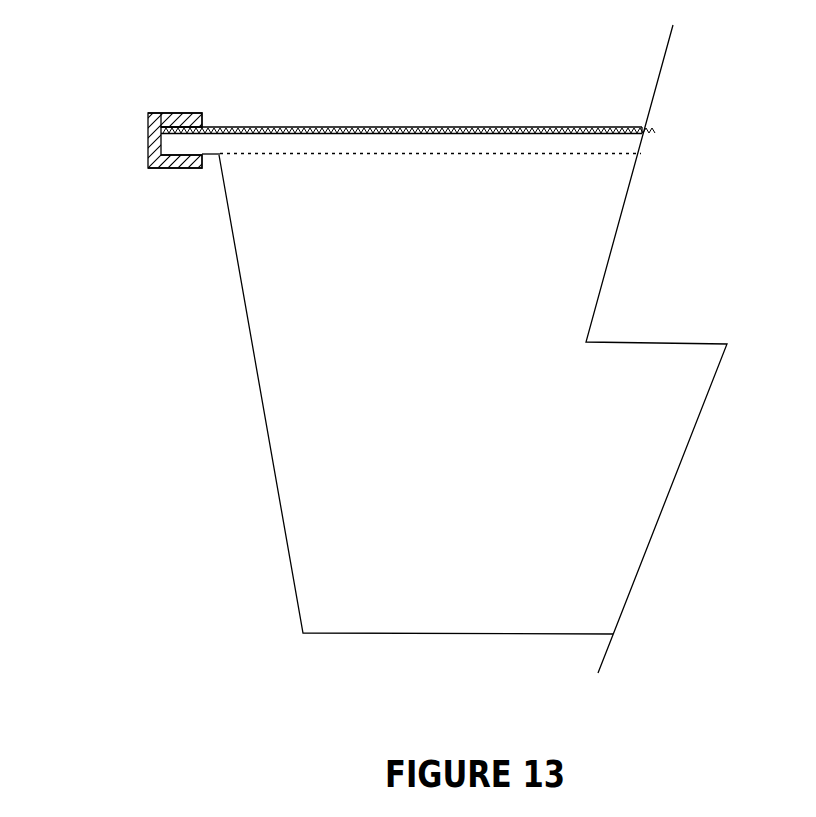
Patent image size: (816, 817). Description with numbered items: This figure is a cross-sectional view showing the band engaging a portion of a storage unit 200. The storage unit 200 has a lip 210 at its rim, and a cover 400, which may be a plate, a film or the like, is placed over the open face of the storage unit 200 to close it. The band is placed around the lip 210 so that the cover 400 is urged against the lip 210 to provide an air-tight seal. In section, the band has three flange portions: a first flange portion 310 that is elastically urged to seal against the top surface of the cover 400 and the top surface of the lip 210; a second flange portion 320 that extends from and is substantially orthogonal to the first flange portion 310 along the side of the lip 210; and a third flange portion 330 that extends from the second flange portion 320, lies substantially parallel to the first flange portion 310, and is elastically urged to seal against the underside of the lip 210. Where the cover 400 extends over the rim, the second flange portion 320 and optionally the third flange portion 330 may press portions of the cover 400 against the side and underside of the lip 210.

The storage unit 200 is at (288, 552).
The lip 210 is at (163, 143).
The first flange portion 310 is at (172, 115).
The second flange portion 320 is at (148, 141).
The third flange portion 330 is at (167, 168).
The cover 400 is at (385, 128).